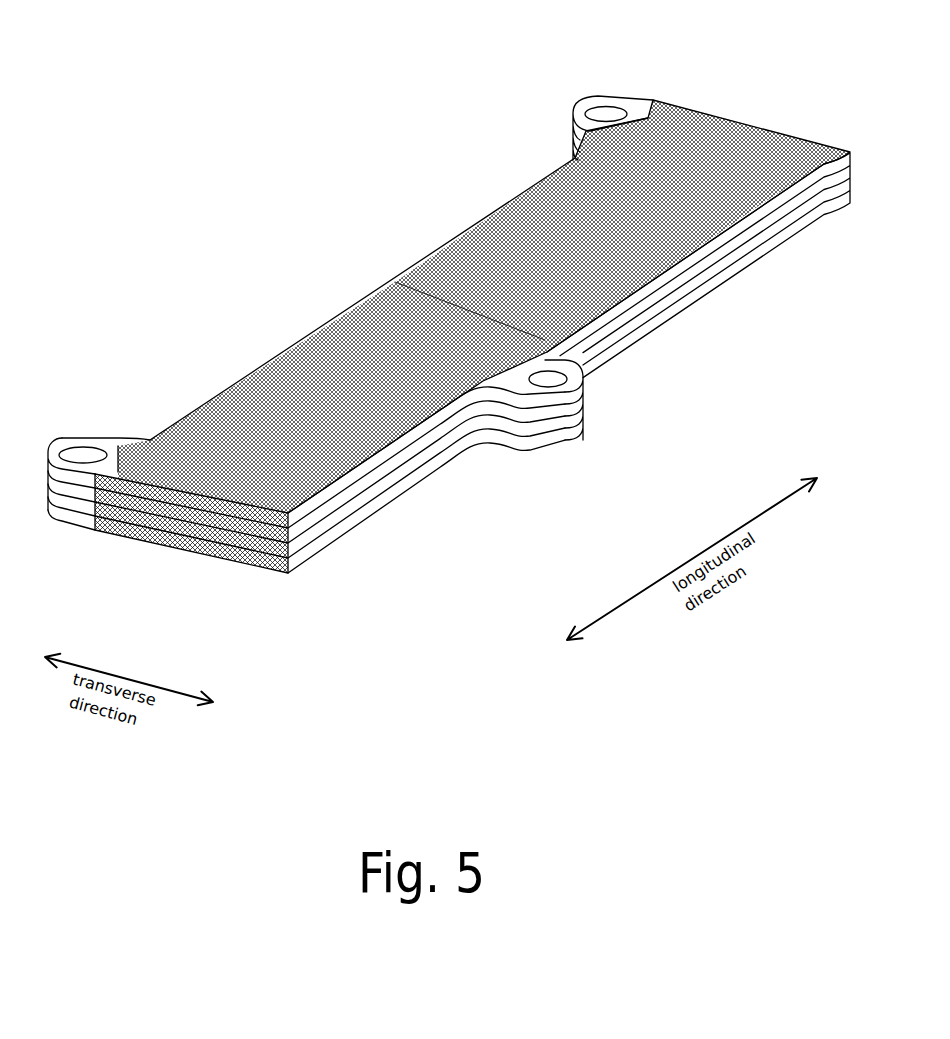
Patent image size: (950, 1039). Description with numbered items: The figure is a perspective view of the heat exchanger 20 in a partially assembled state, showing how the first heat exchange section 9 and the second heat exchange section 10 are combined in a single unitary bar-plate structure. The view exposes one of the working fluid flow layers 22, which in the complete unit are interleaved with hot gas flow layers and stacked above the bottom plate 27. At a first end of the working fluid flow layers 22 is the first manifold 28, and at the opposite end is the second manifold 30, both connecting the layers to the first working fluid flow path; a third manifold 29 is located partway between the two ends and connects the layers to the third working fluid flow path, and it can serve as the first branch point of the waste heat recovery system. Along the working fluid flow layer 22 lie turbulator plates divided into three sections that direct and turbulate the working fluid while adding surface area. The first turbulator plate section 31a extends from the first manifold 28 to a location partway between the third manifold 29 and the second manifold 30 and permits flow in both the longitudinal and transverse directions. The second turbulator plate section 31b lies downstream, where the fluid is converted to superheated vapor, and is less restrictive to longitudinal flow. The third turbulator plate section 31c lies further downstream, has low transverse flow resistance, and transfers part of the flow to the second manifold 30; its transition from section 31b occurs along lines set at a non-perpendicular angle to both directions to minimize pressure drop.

The heat exchanger 20 is at (302, 130).
The second manifold 30 is at (617, 113).
The third turbulator plate section 31c is at (692, 123).
The second turbulator plate section 31b is at (560, 210).
The first turbulator plate section 31a is at (350, 350).
The first manifold 28 is at (83, 463).
The working fluid flow layers 22 is at (145, 445).
The third manifold 29 is at (549, 388).
The bottom plate 27 is at (232, 560).
The second heat exchange section 10 is at (360, 597).
The first heat exchange section 9 is at (867, 253).